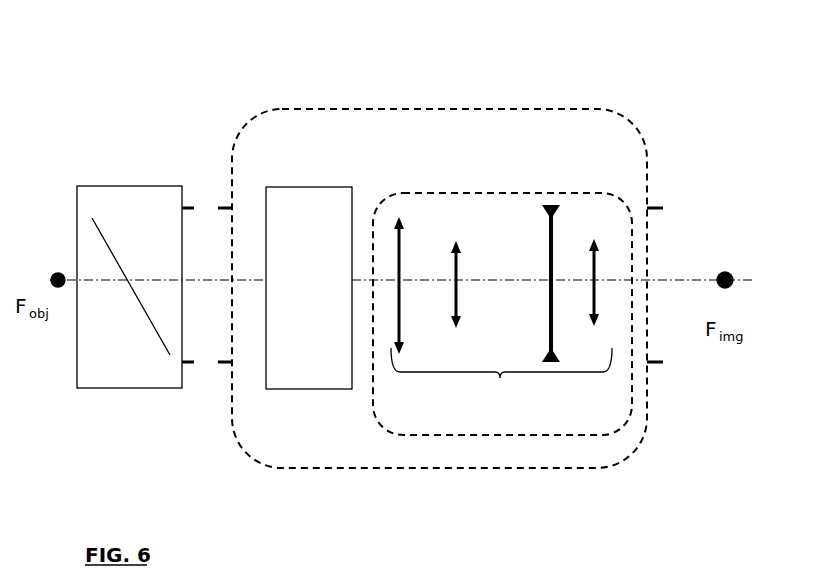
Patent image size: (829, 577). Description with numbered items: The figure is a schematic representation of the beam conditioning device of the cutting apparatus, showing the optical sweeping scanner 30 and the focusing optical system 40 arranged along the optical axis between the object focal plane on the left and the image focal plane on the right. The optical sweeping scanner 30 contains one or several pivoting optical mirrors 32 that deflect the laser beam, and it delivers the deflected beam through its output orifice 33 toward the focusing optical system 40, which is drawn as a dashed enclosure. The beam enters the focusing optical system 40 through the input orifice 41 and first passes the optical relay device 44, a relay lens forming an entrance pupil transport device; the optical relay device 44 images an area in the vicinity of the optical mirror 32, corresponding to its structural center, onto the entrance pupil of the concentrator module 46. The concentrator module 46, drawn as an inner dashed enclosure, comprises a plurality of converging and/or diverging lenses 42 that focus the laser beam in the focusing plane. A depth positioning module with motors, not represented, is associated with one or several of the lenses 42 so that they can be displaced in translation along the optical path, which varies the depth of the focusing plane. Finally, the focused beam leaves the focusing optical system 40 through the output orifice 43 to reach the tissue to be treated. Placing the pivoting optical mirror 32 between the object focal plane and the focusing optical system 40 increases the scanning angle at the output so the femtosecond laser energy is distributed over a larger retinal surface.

The optical sweeping scanner 30 is at (82, 186).
The optical mirror 32 is at (152, 325).
The output orifice 33 is at (190, 208).
The focusing optical system 40 is at (560, 468).
The input orifice 41 is at (222, 208).
The lenses 42 is at (502, 231).
The output orifice 43 is at (658, 208).
The optical relay device 44 is at (320, 187).
The concentrator module 46 is at (499, 193).